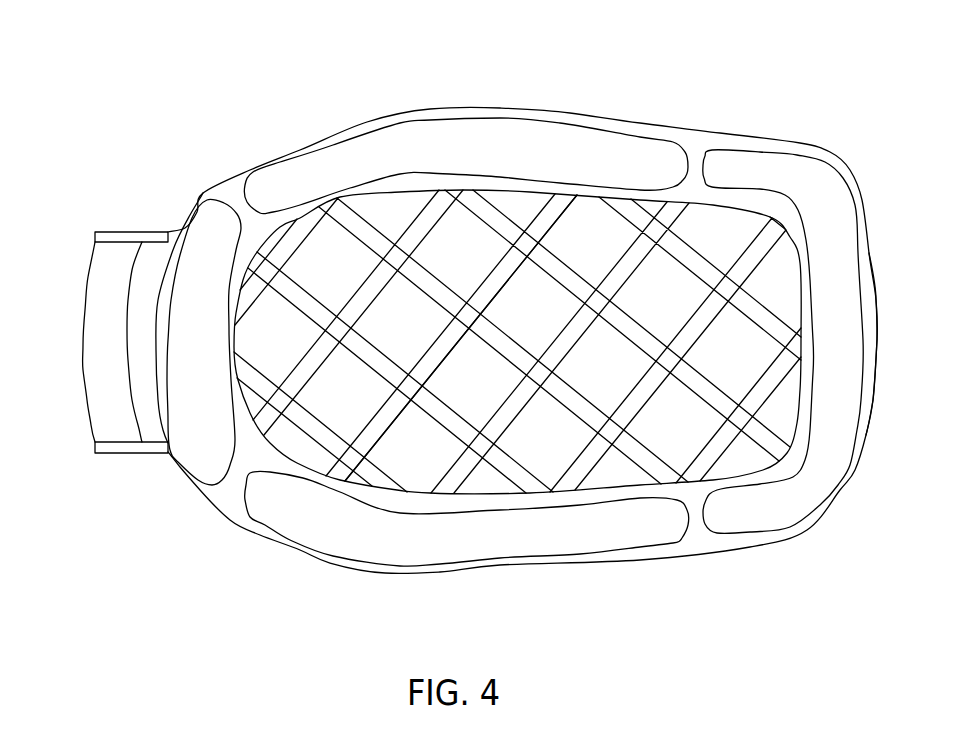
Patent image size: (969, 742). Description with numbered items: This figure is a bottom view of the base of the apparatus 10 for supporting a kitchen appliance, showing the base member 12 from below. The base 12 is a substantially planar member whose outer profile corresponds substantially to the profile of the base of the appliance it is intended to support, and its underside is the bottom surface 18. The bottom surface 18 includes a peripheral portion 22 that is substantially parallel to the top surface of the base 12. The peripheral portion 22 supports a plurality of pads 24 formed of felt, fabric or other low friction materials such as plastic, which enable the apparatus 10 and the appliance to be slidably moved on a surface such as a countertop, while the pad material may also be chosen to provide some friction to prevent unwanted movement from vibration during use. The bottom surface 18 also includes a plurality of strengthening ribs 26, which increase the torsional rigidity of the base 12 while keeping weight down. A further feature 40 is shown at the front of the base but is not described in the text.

The apparatus 10 is at (737, 81).
The base member 12 is at (848, 175).
The bottom surface 18 is at (705, 226).
The peripheral portion 22 is at (868, 370).
The pads 24 is at (215, 225).
The strengthening ribs 26 is at (568, 250).
The mounting bracket 40 is at (82, 368).